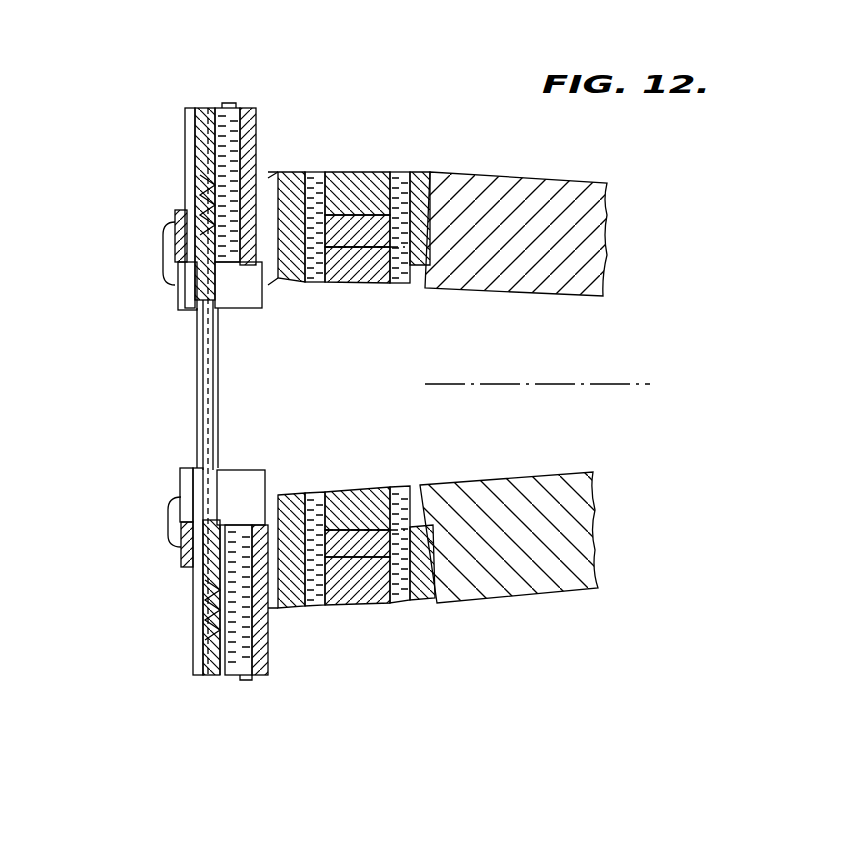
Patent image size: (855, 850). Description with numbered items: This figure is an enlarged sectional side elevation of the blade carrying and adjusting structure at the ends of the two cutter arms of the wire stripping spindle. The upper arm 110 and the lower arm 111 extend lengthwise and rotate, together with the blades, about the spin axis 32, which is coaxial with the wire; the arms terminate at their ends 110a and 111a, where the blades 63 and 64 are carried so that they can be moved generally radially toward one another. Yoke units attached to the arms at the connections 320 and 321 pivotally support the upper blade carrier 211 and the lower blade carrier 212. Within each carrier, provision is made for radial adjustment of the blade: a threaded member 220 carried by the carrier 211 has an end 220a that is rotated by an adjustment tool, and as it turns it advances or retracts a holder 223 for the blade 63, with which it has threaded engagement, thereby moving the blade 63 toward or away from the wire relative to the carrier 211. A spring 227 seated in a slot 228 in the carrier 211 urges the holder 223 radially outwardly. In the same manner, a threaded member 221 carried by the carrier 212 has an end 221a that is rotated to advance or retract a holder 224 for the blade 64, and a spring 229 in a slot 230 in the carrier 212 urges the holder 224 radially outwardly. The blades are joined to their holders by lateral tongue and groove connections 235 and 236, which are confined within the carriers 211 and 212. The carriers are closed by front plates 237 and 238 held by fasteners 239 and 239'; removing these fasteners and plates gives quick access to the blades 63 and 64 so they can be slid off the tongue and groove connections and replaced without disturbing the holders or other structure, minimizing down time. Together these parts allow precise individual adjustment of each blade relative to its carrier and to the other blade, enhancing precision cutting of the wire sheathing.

The upper blade carrier 211 is at (216, 168).
The lower blade carrier 212 is at (220, 554).
The threaded member 220 is at (258, 138).
The end of threaded member 220a is at (235, 103).
The threaded member 221 is at (268, 650).
The end of threaded member 221a is at (252, 680).
The holder 223 is at (258, 115).
The holder 224 is at (268, 620).
The spring 227 is at (270, 178).
The slot 228 is at (215, 183).
The spring 229 is at (210, 598).
The slot 230 is at (215, 618).
The tongue and groove connection 235 is at (185, 135).
The tongue and groove connection 236 is at (193, 650).
The carrier front plate 237 is at (185, 163).
The carrier front plate 238 is at (193, 572).
The fastener 239 is at (136, 260).
The fastener 239' is at (139, 516).
The blade 63 is at (197, 405).
The blade 64 is at (218, 385).
The connection of yoke to arm 320 is at (384, 217).
The connection of yoke to arm 321 is at (371, 555).
The arm 110 is at (610, 181).
The end of arm 110a is at (345, 284).
The arm 111 is at (562, 602).
The end of arm 111a is at (365, 490).
The spin axis 32 is at (613, 392).